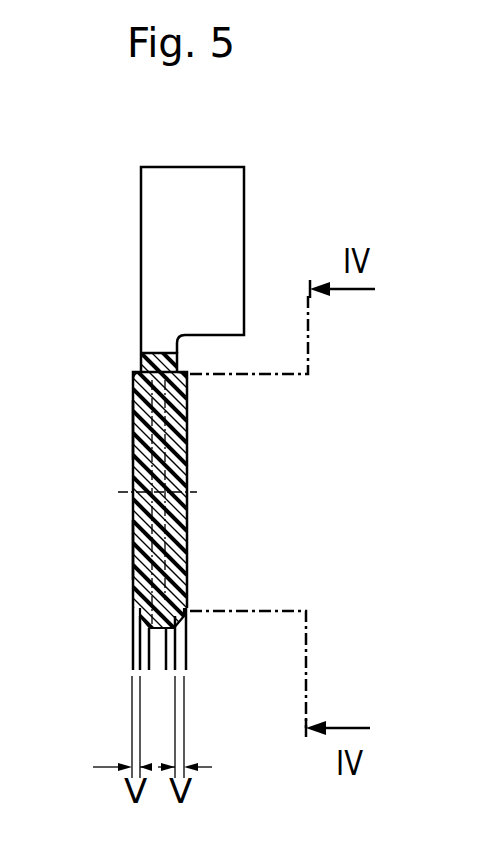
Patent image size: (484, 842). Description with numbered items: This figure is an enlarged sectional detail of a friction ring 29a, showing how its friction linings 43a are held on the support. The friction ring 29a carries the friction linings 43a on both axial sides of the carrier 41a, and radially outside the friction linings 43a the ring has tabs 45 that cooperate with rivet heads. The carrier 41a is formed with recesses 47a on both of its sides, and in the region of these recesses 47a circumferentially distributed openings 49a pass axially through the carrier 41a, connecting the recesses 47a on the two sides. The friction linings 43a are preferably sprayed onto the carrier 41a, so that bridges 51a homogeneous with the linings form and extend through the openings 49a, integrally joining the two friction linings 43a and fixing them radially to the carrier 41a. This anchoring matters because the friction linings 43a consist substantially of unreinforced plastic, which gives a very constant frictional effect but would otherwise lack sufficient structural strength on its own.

The friction ring 29a is at (182, 376).
The tabs 45 is at (159, 208).
The recesses 47a is at (133, 391).
The openings 49a is at (133, 428).
The friction linings 43a is at (143, 505).
The bridges 51a is at (133, 547).
The carrier 41a is at (141, 618).